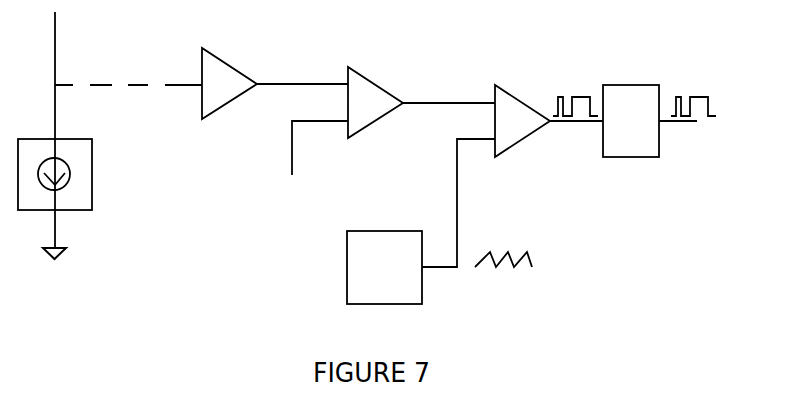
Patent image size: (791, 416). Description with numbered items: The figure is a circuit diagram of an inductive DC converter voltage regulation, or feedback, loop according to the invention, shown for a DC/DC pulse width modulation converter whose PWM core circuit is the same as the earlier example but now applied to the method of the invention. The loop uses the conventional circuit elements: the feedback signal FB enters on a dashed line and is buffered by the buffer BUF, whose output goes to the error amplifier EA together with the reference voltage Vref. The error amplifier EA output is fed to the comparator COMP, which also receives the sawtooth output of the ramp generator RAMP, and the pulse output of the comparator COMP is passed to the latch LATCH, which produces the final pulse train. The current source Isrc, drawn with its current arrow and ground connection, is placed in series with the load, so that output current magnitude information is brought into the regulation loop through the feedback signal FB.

The feedback signal FB is at (128, 72).
The current source Isrc is at (61, 199).
The buffer BUF is at (275, 98).
The error amplifier EA is at (421, 117).
The reference voltage Vref is at (311, 163).
The comparator COMP is at (549, 136).
The latch LATCH is at (659, 136).
The ramp generator RAMP is at (439, 221).